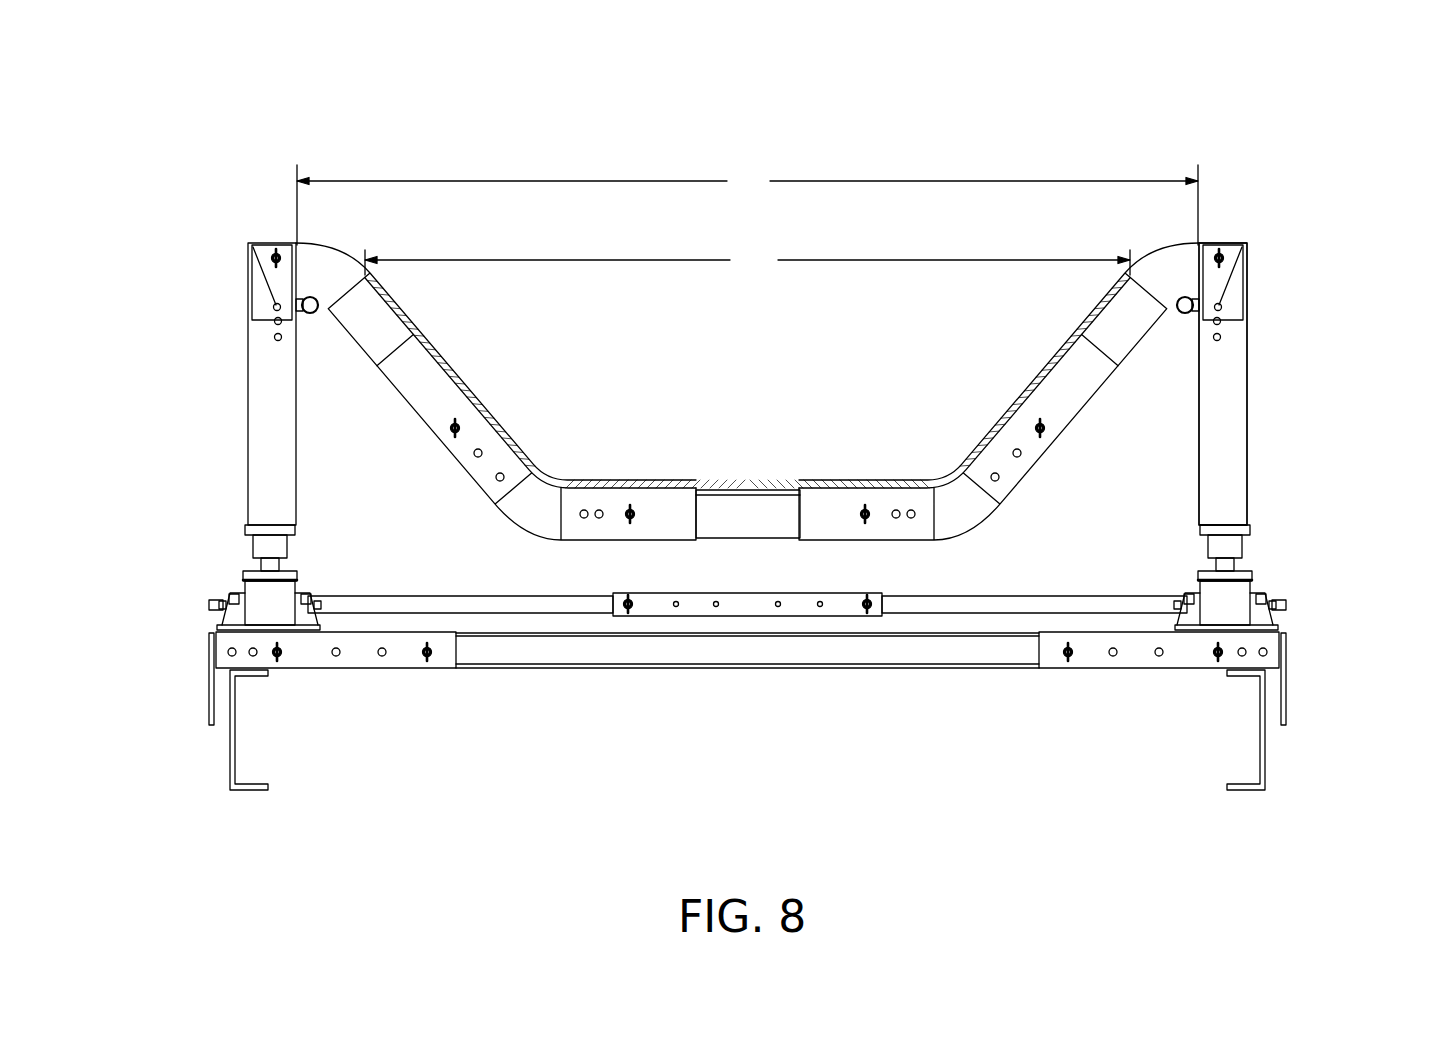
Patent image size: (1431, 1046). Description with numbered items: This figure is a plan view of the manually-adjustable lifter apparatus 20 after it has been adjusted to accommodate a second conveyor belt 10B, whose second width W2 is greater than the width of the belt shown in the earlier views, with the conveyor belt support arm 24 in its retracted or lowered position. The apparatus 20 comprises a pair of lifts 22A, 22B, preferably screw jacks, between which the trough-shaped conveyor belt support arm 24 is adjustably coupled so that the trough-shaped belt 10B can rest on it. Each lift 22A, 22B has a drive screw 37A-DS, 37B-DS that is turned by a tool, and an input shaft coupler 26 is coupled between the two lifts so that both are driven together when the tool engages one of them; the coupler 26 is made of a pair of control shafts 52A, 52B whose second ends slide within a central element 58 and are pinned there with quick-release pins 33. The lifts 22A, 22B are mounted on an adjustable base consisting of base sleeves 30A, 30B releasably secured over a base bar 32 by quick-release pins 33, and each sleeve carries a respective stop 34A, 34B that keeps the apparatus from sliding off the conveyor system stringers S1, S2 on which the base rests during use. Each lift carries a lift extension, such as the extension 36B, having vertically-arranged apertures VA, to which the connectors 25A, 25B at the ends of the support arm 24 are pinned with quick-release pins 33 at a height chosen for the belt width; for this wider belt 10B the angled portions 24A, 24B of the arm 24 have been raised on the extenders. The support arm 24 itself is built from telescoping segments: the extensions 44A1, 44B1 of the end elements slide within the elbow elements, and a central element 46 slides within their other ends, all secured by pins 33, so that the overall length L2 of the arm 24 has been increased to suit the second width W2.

The adjustable lifter apparatus 20 is at (1306, 160).
The quick-release pin 33 is at (310, 297).
The connector 25A is at (280, 283).
The connector 25B is at (1215, 283).
The apertures VA is at (272, 337).
The lift 22A is at (210, 556).
The lift 22B is at (1285, 556).
The lift extension 36B is at (1228, 408).
The drive screw 37A-DS is at (209, 606).
The drive screw 37B-DS is at (1286, 605).
The stop 34A is at (209, 700).
The stop 34B is at (1287, 700).
The stringer S1 is at (232, 770).
The stringer S2 is at (1265, 770).
The control shaft 52A is at (330, 596).
The control shaft 52B is at (1165, 596).
The conveyor belt support arm 24 is at (747, 415).
The angled portion 24A is at (370, 394).
The angled portion 24B is at (1125, 400).
The extension 44A1 is at (360, 312).
The extension 44B1 is at (1135, 312).
The second conveyor belt 10B is at (727, 480).
The central element 46 is at (744, 515).
The input shaft coupler 26 is at (747, 670).
The base sleeve 30A is at (303, 652).
The base sleeve 30B is at (1140, 656).
The base bar 32 is at (948, 652).
The central element 58 is at (652, 612).
The length L2 is at (747, 205).
The second width W2 is at (747, 263).